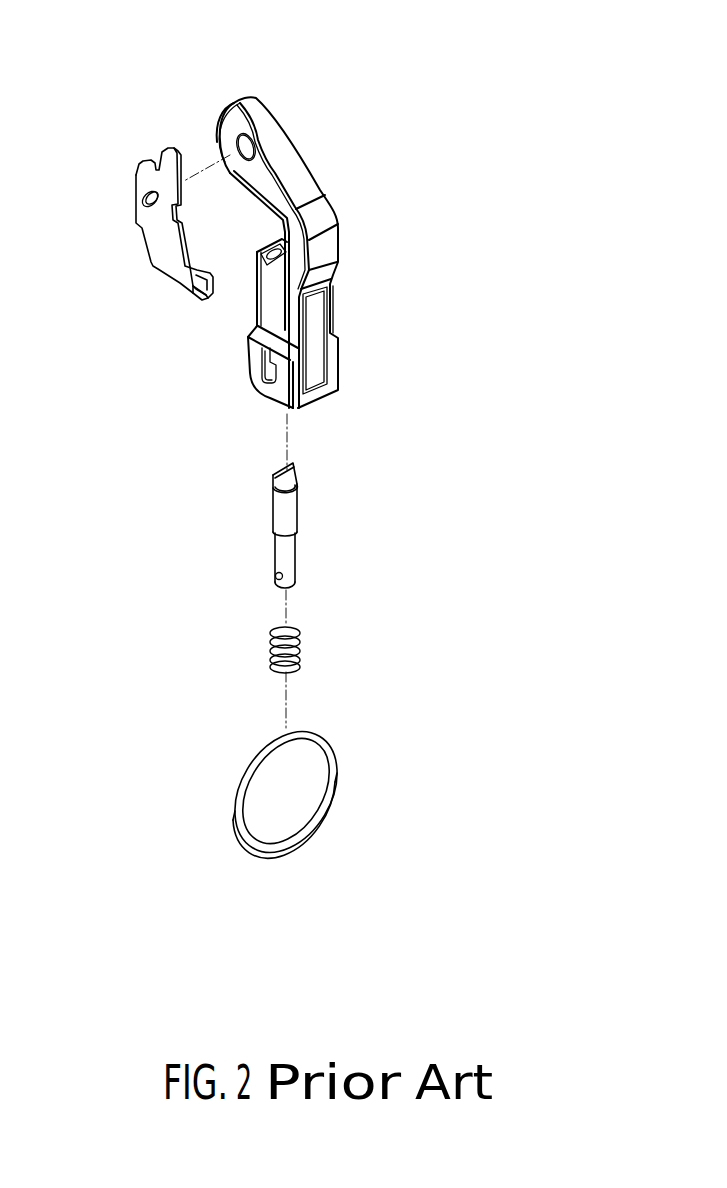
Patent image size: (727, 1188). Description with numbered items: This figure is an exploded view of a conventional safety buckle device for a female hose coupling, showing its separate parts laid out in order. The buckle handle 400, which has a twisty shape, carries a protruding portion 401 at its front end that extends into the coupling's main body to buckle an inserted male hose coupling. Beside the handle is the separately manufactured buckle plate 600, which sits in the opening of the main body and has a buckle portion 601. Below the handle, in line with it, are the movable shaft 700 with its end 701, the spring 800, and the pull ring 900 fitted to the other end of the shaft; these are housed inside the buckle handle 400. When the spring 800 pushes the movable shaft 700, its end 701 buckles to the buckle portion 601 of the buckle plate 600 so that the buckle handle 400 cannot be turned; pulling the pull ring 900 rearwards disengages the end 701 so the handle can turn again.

The buckle handle 400 is at (328, 248).
The protruding portion 401 is at (224, 128).
The buckle plate 600 is at (158, 224).
The buckle portion 601 is at (200, 296).
The movable shaft 700 is at (292, 545).
The end of the movable shaft 701 is at (288, 478).
The spring 800 is at (300, 643).
The pull ring 900 is at (320, 733).